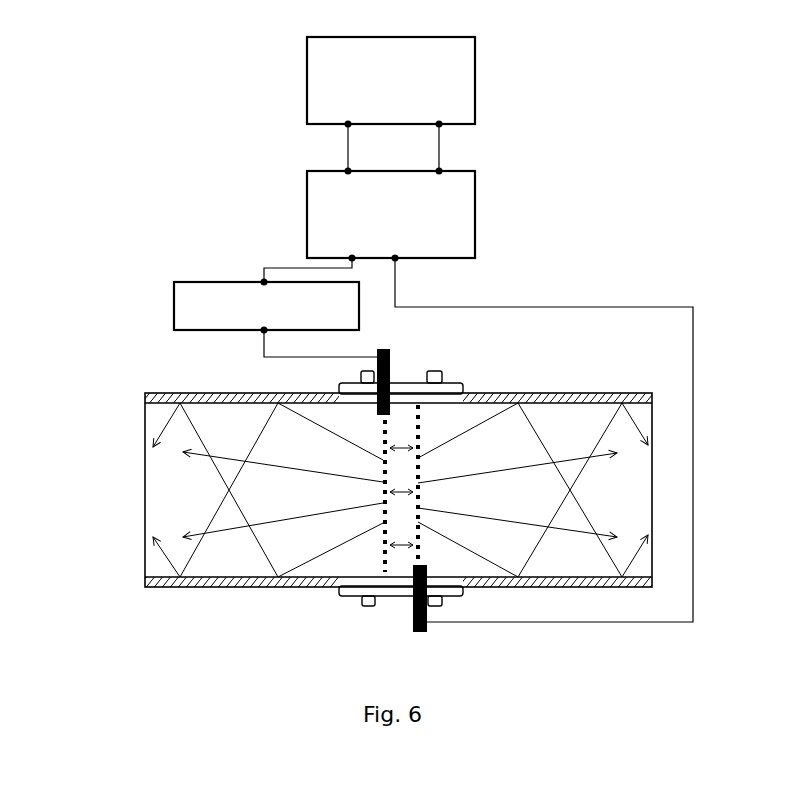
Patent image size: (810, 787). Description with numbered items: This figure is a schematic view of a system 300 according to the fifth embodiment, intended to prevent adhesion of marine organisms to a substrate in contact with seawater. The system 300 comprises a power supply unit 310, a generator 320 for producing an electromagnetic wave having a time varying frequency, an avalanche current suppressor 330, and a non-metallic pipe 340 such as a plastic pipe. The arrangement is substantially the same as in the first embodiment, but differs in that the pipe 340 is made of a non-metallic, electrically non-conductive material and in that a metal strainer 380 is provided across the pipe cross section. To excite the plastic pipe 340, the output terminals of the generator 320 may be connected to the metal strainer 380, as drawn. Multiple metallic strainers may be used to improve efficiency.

The system 300 is at (650, 190).
The power supply unit 310 is at (443, 75).
The generator 320 is at (437, 218).
The avalanche current suppressor 330 is at (193, 307).
The non-metallic pipe 340 is at (582, 393).
The metal strainer 380 is at (392, 368).